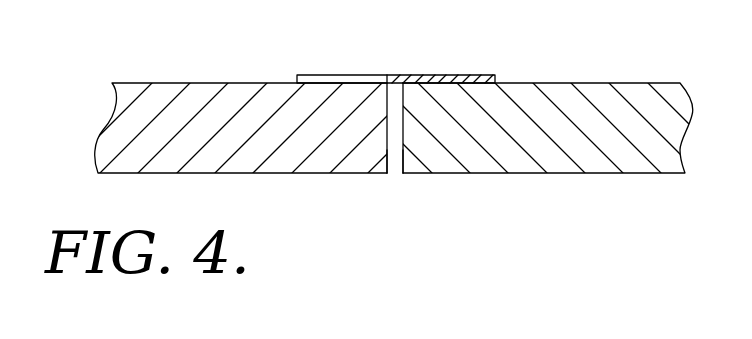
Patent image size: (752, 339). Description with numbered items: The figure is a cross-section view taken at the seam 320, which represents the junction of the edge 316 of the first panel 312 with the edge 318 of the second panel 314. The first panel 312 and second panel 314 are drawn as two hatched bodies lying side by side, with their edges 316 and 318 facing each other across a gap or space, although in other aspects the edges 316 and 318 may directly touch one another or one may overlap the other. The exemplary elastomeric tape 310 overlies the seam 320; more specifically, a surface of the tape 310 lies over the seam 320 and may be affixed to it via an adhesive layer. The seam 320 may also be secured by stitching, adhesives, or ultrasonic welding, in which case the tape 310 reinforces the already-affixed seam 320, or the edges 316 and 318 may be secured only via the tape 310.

The elastomeric tape 310 is at (400, 75).
The first panel 312 is at (217, 83).
The second panel 314 is at (588, 83).
The edge of the first panel 316 is at (387, 158).
The edge of the second panel 318 is at (403, 125).
The seam 320 is at (393, 204).